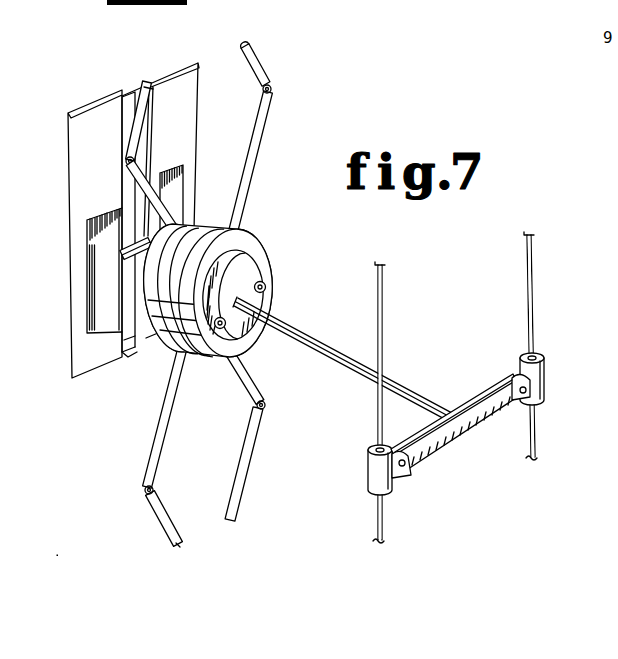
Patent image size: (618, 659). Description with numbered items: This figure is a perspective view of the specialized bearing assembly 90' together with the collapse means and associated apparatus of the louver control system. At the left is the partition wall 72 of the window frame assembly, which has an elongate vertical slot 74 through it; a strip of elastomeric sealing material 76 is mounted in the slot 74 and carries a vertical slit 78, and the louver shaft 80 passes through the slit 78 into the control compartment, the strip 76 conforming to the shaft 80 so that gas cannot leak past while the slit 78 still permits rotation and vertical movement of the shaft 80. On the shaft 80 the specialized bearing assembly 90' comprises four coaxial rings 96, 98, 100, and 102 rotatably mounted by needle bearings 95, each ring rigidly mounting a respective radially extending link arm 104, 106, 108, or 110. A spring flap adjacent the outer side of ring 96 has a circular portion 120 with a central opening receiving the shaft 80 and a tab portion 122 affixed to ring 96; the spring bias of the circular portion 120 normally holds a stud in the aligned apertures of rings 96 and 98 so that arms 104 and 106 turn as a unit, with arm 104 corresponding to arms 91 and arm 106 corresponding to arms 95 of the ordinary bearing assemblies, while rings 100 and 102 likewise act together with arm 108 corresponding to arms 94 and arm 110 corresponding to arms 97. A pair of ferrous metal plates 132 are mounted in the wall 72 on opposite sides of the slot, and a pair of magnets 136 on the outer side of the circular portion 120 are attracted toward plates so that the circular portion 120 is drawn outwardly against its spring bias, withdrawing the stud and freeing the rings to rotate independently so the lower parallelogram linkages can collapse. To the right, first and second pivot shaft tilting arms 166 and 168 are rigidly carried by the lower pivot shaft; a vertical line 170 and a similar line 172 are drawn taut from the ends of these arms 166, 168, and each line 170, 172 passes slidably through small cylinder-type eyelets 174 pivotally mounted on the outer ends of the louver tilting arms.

The partition wall 72 is at (180, 125).
The elongate vertical slot 74 is at (122, 90).
The strip of elastomeric sealing material 76 is at (122, 188).
The vertical slit 78 is at (131, 358).
The shaft 80 is at (320, 340).
The specialized bearing assembly 90' is at (225, 272).
The louver link arm 91 is at (250, 477).
The louver link arm 94 is at (155, 523).
The needle bearings 95 is at (160, 80).
The coaxial ring 96 is at (268, 255).
The louver link arm 97 is at (262, 62).
The coaxial ring 98 is at (209, 212).
The coaxial ring 100 is at (157, 343).
The coaxial ring 102 is at (144, 302).
The link arm 104 is at (271, 115).
The link arm 106 is at (147, 448).
The link arm 108 is at (150, 187).
The link arm 110 is at (263, 391).
The circular portion 120 is at (248, 263).
The tab portion 122 is at (223, 358).
The ferrous metal plates 132 is at (175, 190).
The magnets 136 is at (266, 288).
The first pivot shaft tilting arm 166 is at (417, 448).
The second pivot shaft tilting arm 168 is at (485, 398).
The vertical line 170 is at (383, 302).
The line 172 is at (527, 277).
The cylinder-type eyelet 174 is at (546, 370).